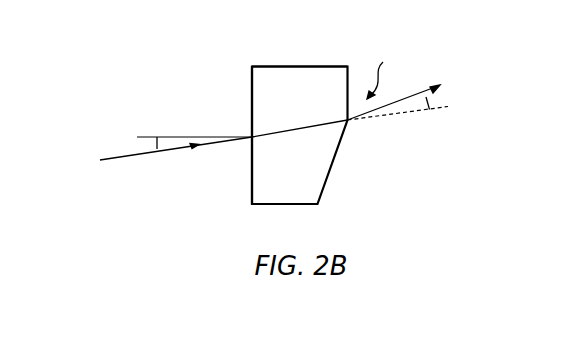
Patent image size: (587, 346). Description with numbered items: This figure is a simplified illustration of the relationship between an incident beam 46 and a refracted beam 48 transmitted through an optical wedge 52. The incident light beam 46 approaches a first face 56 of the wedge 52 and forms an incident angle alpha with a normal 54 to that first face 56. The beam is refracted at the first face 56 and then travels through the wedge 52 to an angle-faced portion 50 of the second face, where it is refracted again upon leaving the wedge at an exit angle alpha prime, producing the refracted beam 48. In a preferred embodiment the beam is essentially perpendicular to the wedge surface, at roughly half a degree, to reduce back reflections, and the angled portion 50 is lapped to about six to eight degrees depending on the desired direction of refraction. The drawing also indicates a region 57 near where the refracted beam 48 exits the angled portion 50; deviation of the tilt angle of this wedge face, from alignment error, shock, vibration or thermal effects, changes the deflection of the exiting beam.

The incident beam 46 is at (122, 157).
The refracted beam 48 is at (395, 104).
The angle-faced portion 50 is at (333, 160).
The optical wedge 52 is at (303, 66).
The normal 54 is at (183, 135).
The first face 56 is at (252, 87).
The exit region of prism 57 is at (386, 68).